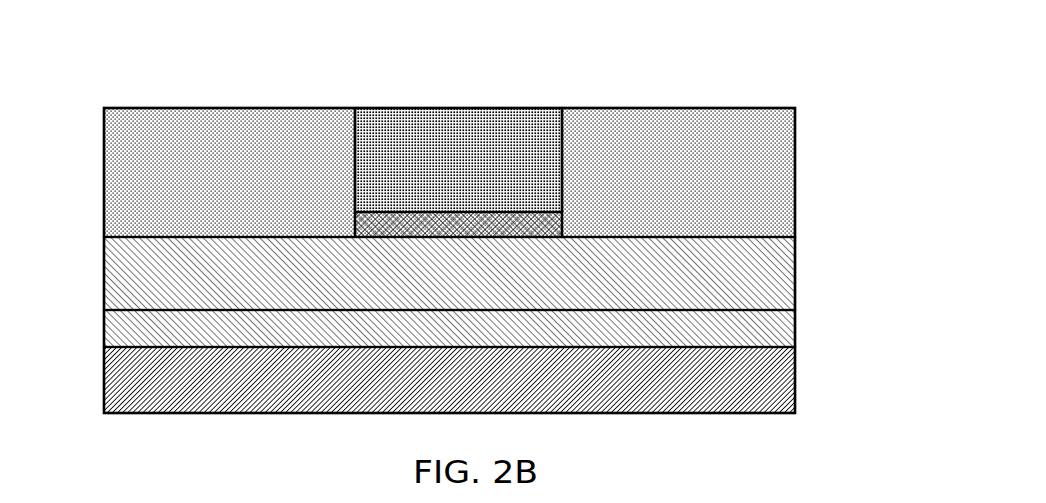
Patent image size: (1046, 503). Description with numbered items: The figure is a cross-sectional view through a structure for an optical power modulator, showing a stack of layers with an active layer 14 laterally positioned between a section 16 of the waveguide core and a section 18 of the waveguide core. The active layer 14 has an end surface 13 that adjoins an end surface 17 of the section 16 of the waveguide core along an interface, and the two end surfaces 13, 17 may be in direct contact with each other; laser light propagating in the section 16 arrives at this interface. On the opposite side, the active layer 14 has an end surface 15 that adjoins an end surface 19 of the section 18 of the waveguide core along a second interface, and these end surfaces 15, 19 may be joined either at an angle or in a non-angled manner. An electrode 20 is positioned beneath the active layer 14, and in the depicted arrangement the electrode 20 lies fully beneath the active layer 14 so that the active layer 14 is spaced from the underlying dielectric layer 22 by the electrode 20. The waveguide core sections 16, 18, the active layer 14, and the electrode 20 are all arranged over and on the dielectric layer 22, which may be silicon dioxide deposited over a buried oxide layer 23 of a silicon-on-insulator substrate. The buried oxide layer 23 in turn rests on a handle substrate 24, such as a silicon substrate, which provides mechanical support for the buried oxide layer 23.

The end surface 13 is at (354, 133).
The active layer 14 is at (397, 175).
The end surface 15 is at (563, 140).
The section of the waveguide core 16 is at (177, 216).
The end surface 17 is at (355, 145).
The section of the waveguide core 18 is at (725, 169).
The end surface 19 is at (562, 157).
The electrode 20 is at (515, 227).
The dielectric layer 22 is at (137, 278).
The buried oxide layer 23 is at (140, 327).
The handle substrate 24 is at (140, 384).